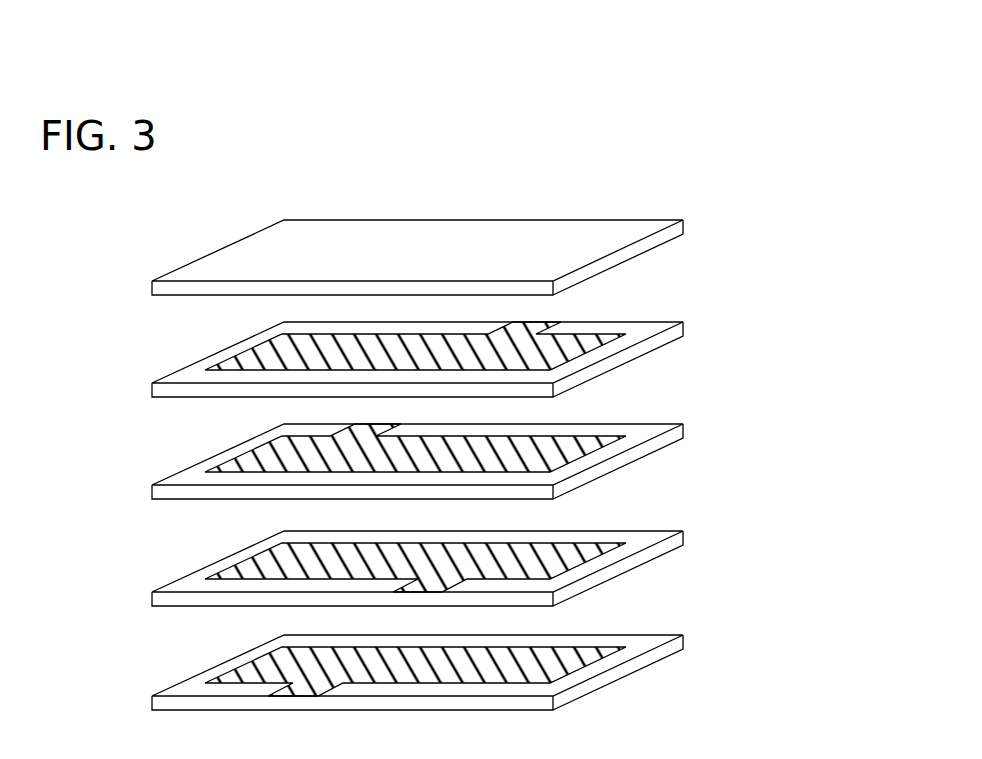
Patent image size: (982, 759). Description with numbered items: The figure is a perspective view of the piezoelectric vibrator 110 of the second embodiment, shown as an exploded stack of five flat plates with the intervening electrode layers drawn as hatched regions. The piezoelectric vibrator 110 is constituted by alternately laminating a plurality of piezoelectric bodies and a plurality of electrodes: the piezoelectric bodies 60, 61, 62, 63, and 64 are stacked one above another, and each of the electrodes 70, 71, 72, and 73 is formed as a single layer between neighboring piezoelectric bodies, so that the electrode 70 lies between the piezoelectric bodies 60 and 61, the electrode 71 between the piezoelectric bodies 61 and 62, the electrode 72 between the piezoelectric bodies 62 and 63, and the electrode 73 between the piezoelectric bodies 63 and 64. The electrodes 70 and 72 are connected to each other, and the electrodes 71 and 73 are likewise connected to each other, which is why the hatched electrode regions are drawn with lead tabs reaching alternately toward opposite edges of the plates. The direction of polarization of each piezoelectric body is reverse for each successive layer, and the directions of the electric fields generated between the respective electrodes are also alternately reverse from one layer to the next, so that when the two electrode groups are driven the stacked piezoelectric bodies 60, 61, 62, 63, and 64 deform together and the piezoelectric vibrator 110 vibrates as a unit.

The piezoelectric body 60 is at (577, 232).
The piezoelectric body 61 is at (637, 327).
The piezoelectric body 62 is at (638, 430).
The piezoelectric body 63 is at (638, 538).
The piezoelectric body 64 is at (638, 642).
The electrode 70 is at (265, 363).
The electrode 71 is at (267, 463).
The electrode 72 is at (267, 567).
The electrode 73 is at (267, 670).
The piezoelectric vibrator 110 is at (806, 750).